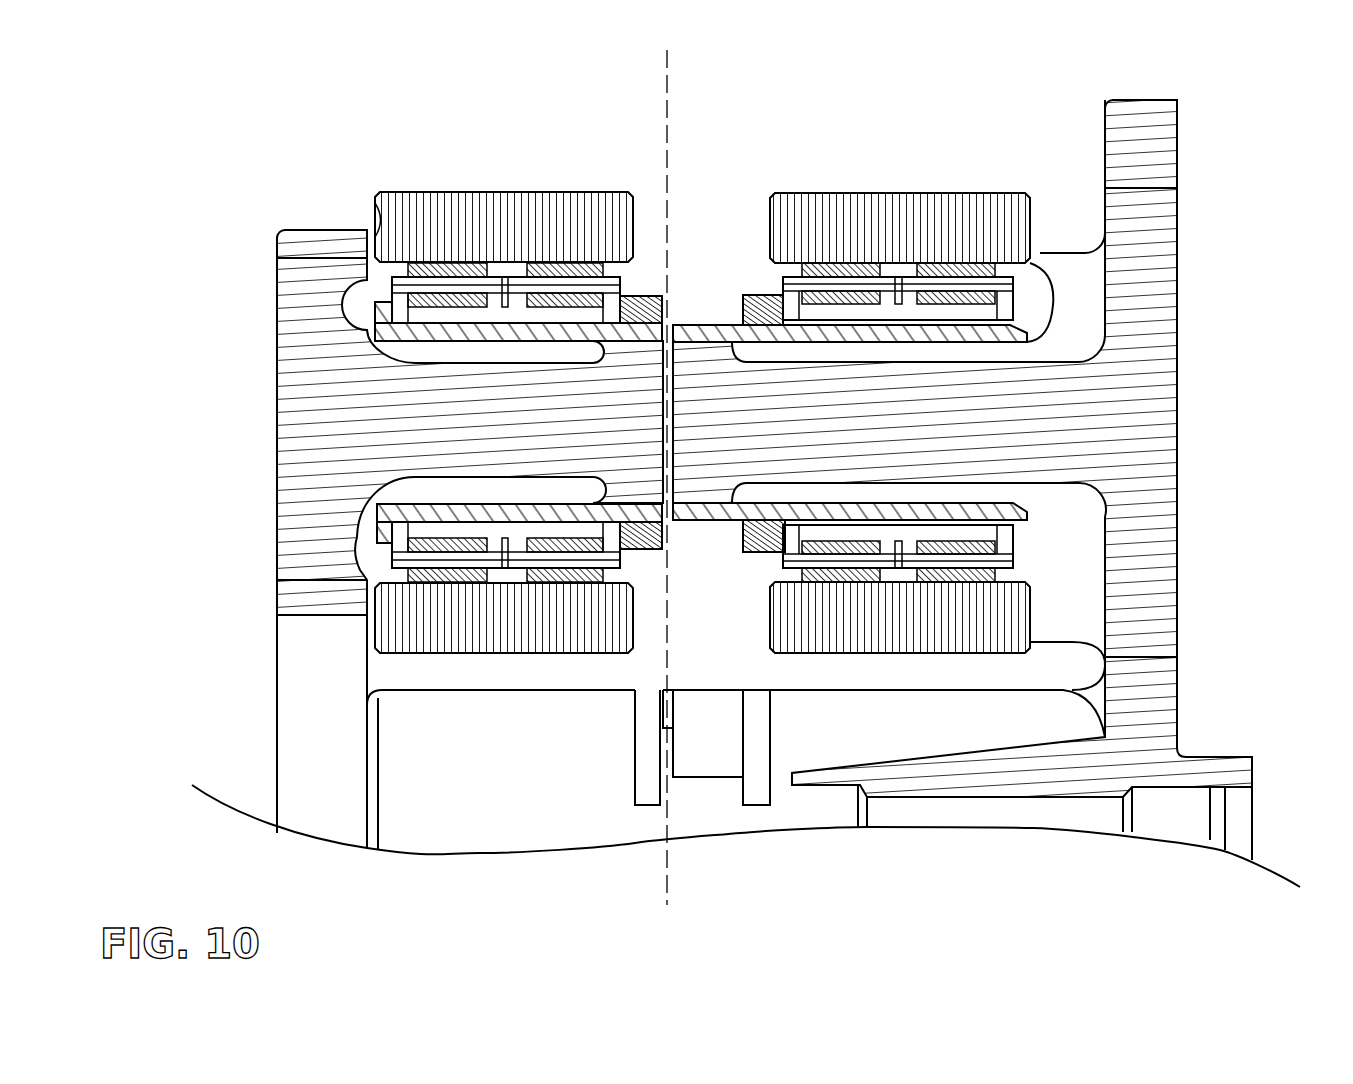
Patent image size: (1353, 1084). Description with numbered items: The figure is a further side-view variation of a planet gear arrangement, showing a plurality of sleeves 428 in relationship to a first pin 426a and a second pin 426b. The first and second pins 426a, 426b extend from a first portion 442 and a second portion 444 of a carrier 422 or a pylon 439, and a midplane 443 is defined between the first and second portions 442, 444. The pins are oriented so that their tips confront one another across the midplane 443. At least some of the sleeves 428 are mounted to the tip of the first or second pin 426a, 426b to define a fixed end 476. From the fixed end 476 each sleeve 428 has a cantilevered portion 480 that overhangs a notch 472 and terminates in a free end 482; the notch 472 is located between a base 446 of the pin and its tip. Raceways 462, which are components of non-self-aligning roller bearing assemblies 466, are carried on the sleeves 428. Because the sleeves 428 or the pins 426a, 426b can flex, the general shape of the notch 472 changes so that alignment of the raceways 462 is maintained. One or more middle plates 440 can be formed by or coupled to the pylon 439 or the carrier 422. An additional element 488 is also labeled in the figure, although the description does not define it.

The carrier 422 is at (1180, 170).
The first pin 426a is at (645, 330).
The second pin 426b is at (726, 322).
The sleeves 428 is at (642, 540).
The pylon 439 is at (1040, 252).
The middle plates 440 is at (277, 335).
The first portion 442 is at (375, 207).
The midplane 443 is at (662, 100).
The second portion 444 is at (1094, 152).
The base 446 is at (277, 462).
The raceways 462 is at (392, 536).
The non-self-aligning roller bearing assemblies 466 is at (495, 590).
The notch 472 is at (514, 330).
The fixed end 476 is at (691, 342).
The cantilevered portion 480 is at (452, 320).
The free end 482 is at (378, 300).
The center spacer 488 is at (666, 530).